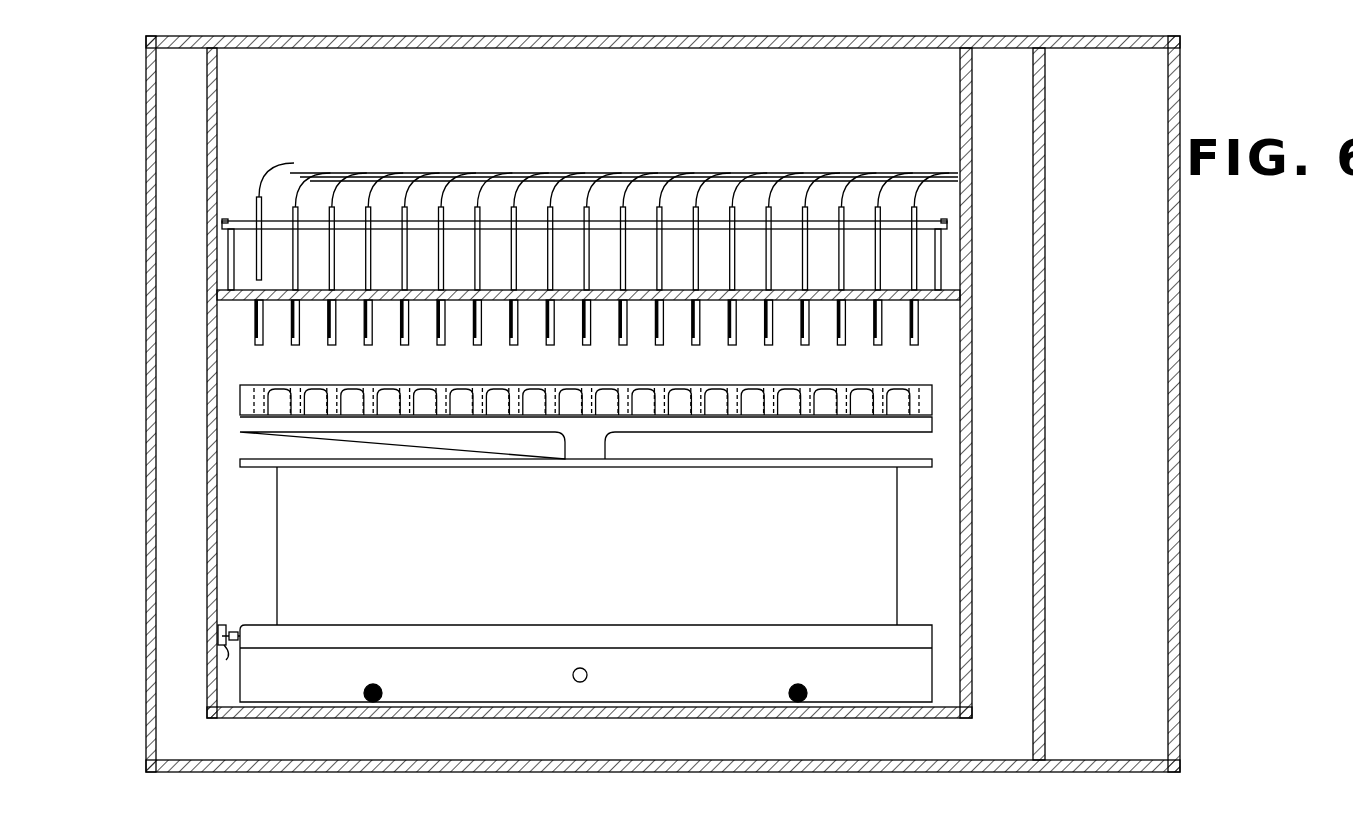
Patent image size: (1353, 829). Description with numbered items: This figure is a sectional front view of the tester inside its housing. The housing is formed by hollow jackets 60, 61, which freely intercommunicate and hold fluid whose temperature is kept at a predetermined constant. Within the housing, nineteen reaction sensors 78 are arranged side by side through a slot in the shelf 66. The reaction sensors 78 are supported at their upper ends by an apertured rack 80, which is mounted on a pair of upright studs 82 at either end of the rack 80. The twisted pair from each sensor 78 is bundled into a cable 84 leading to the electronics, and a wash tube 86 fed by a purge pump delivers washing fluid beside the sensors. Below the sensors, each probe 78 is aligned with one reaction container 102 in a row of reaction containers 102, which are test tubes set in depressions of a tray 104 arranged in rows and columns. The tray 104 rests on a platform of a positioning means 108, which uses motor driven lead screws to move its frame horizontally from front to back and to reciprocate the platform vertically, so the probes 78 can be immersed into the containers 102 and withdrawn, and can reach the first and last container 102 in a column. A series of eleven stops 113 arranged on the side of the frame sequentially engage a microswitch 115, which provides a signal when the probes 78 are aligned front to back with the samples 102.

The hollow jacket 60 is at (158, 292).
The hollow jacket 61 is at (355, 760).
The shelf 66 is at (250, 300).
The reaction sensor 78 is at (300, 355).
The apertured rack 80 is at (243, 218).
The upright stud 82 is at (230, 252).
The cable 84 is at (790, 176).
The wash tube 86 is at (298, 312).
The reaction container 102 is at (895, 382).
The tray 104 is at (666, 385).
The positioning means 108 is at (692, 563).
The stop 113 is at (248, 630).
The limit switch 115 is at (222, 650).